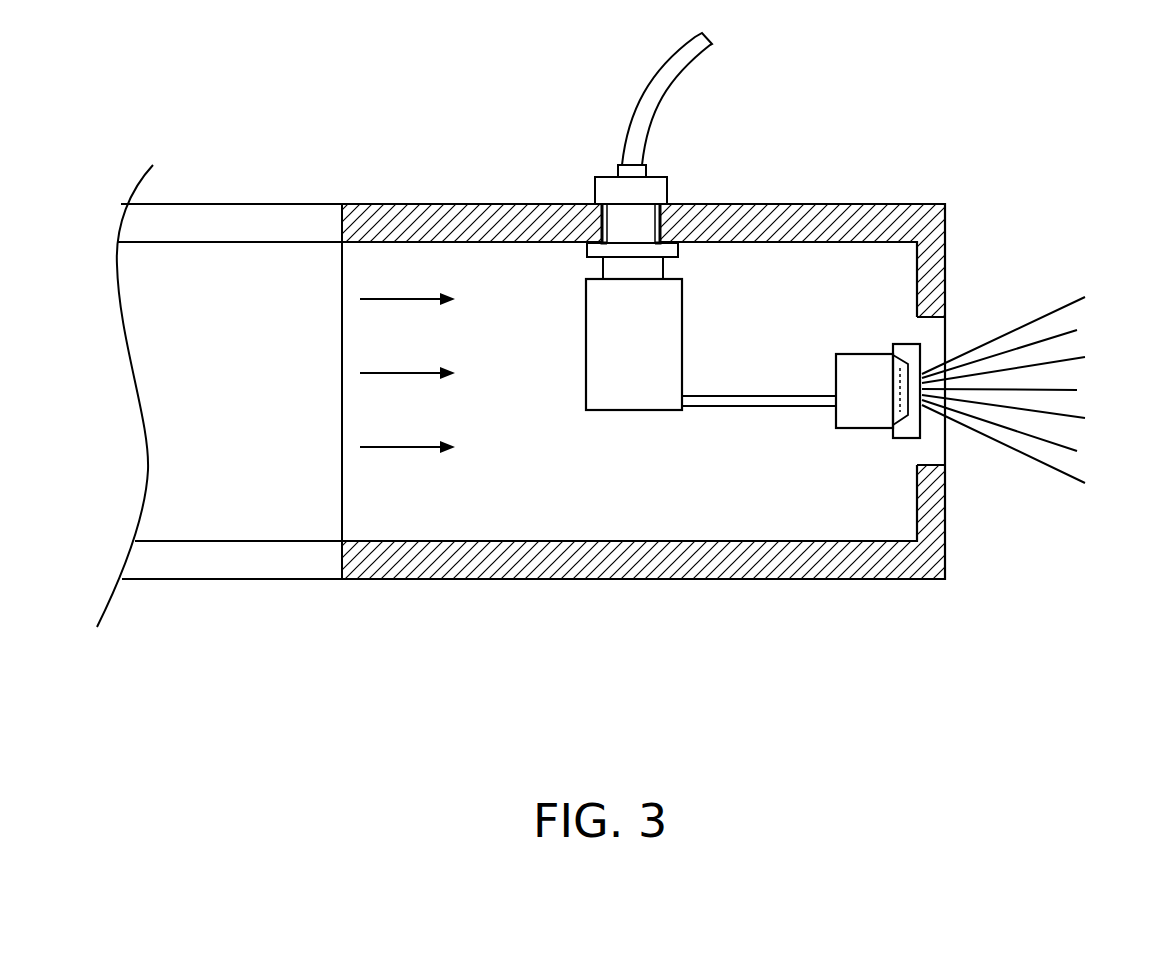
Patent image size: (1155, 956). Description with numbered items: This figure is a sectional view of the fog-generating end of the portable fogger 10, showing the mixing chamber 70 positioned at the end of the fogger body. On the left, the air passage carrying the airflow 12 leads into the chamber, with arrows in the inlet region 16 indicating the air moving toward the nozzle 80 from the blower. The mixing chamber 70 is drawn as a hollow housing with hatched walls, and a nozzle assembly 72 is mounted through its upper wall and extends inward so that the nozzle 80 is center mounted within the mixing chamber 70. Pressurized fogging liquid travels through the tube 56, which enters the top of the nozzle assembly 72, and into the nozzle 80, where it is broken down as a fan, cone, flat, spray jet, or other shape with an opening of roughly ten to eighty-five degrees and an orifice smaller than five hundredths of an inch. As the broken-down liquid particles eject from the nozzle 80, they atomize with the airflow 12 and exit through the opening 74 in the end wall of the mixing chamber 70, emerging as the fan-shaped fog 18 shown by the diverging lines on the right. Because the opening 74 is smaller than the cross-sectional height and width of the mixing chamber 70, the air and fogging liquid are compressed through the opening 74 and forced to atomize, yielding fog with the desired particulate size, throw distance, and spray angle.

The exhaust treatment system 10 is at (1062, 119).
The airflow 12 is at (420, 522).
The exhaust gas flow 16 is at (215, 401).
The injected reductant spray 18 is at (1022, 457).
The tube 56 is at (642, 88).
The mixing chamber 70 is at (820, 203).
The injector assembly 72 is at (670, 250).
The opening 74 is at (935, 333).
The nozzle 80 is at (868, 410).